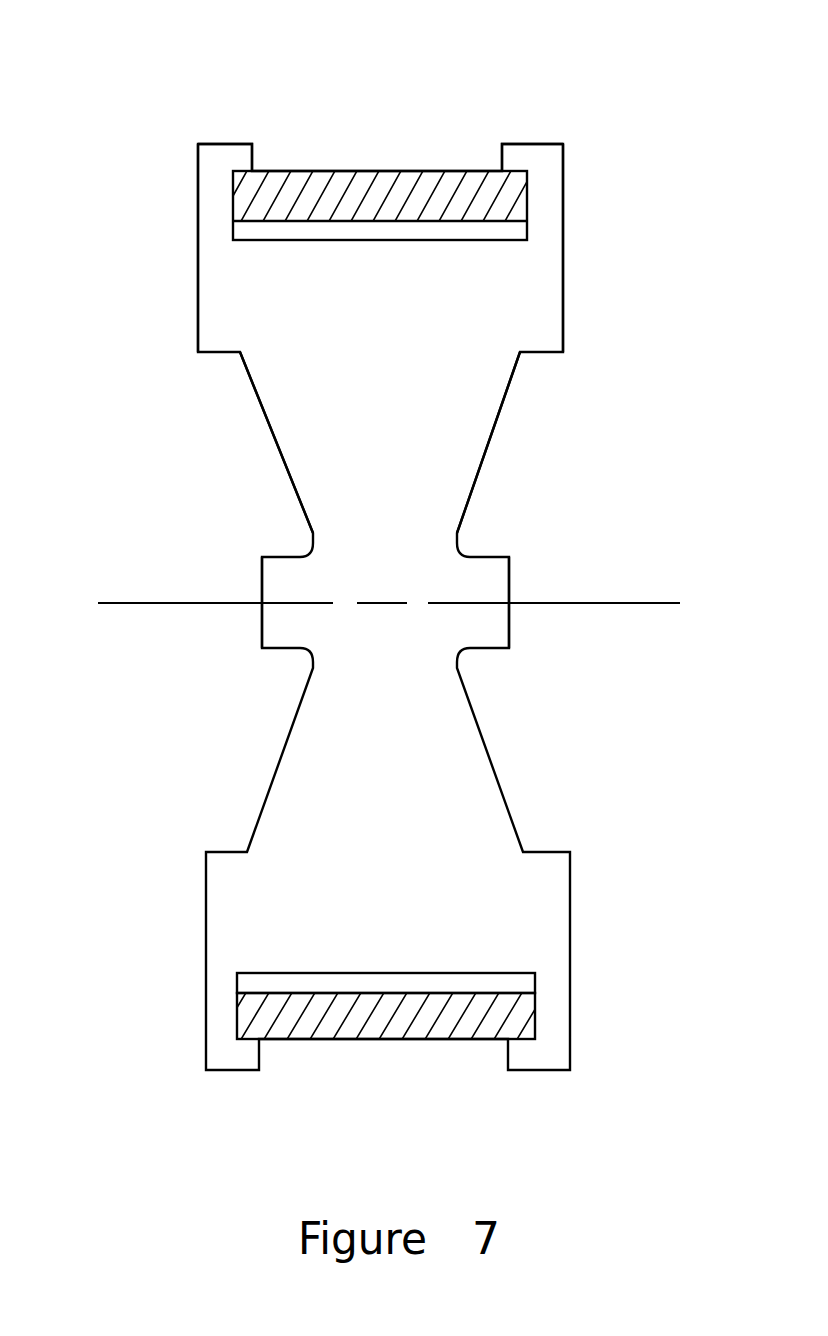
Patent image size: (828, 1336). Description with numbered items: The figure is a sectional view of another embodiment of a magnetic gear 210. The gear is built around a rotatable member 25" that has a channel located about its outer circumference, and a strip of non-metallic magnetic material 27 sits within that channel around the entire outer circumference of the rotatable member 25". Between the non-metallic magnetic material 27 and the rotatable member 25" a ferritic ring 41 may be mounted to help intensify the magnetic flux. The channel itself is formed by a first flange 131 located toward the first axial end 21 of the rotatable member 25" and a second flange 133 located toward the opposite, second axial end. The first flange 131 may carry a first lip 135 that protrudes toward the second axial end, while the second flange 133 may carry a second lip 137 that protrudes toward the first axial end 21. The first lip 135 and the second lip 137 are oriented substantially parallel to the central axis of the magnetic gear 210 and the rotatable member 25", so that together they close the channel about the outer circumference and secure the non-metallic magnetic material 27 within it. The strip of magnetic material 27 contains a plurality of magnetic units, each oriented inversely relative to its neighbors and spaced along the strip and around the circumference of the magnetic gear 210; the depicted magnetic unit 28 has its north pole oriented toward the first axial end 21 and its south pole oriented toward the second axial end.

The first axial end 21 is at (197, 332).
The first flange 131 is at (207, 212).
The second flange 133 is at (553, 218).
The first lip 135 is at (230, 148).
The second lip 137 is at (548, 148).
The magnetic unit 28 is at (383, 148).
The rotatable member 25 is at (440, 495).
The magnetic gear 210 is at (510, 637).
The ferritic ring 41 is at (527, 980).
The non-metallic magnetic material 27 is at (367, 1030).